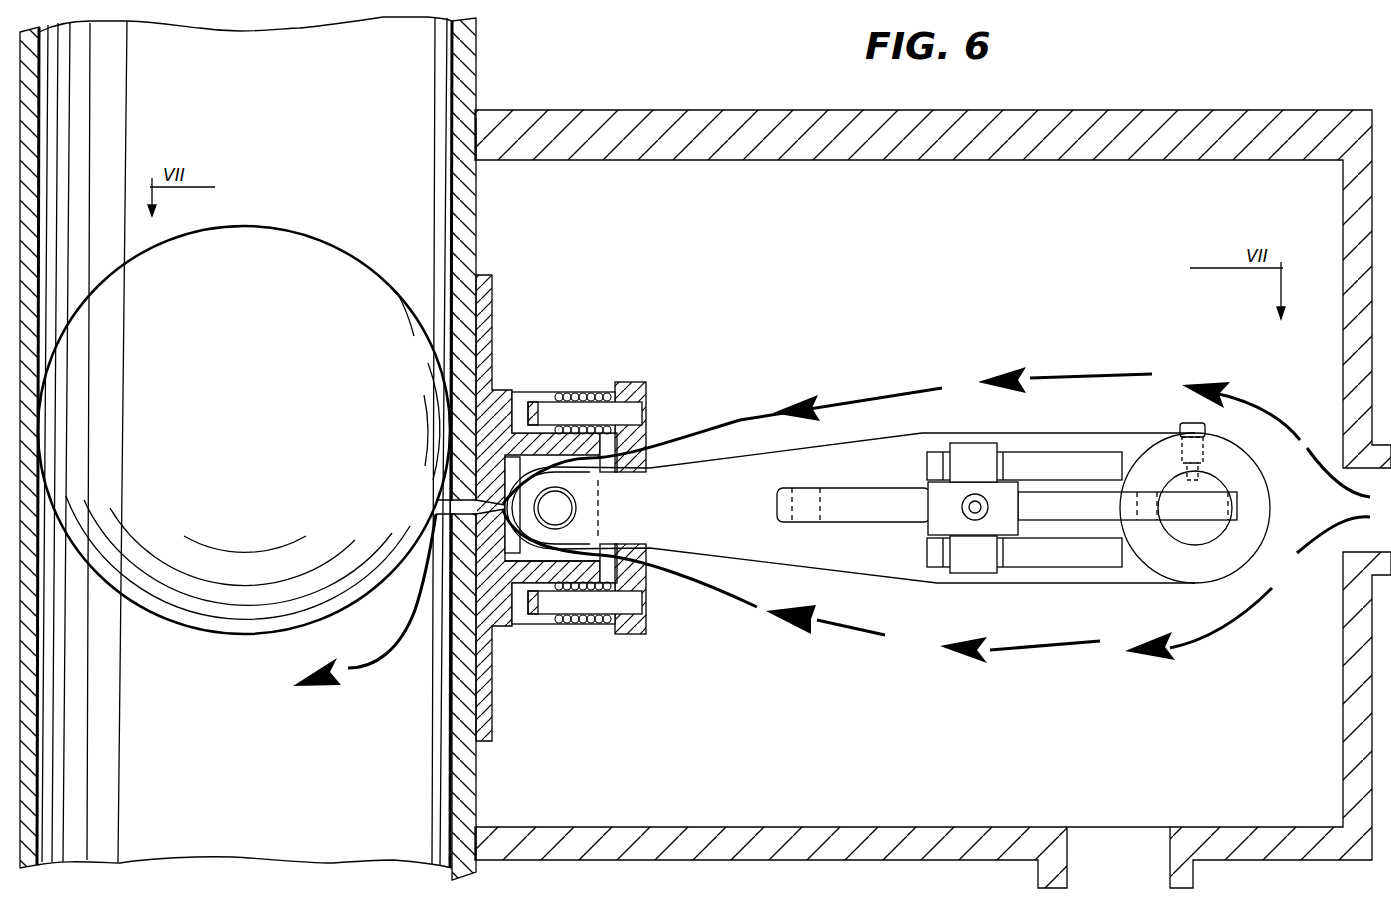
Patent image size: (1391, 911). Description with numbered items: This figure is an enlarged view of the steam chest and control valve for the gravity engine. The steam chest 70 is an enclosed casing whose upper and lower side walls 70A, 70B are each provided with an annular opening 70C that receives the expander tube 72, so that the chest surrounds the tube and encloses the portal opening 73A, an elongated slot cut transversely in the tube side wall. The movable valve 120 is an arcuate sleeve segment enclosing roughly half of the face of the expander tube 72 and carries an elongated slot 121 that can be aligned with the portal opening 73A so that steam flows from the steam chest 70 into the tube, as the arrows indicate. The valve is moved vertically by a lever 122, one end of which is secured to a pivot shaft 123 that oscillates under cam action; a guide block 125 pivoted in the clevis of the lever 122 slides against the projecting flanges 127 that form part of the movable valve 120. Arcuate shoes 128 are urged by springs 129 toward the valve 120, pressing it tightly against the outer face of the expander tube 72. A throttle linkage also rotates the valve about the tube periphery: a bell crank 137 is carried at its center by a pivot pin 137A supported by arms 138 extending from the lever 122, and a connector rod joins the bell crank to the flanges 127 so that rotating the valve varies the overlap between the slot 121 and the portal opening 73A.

The steam chest 70 is at (933, 474).
The side wall 70A is at (776, 112).
The bottom wall of housing 70B is at (875, 827).
The annular opening 70C is at (478, 122).
The expander tube 72 is at (478, 232).
The portal opening 73A is at (460, 503).
The movable valve 120 is at (493, 314).
The elongated slot 121 is at (460, 505).
The lever 122 is at (975, 434).
The pivot shaft 123 is at (1208, 478).
The guide block 125 is at (527, 590).
The projecting flange 127 is at (548, 402).
The arcuate shoe 128 is at (527, 392).
The spring 129 is at (589, 396).
The bell crank 137 is at (1074, 512).
The pivot pin 137A is at (966, 565).
The arm 138 is at (1048, 462).